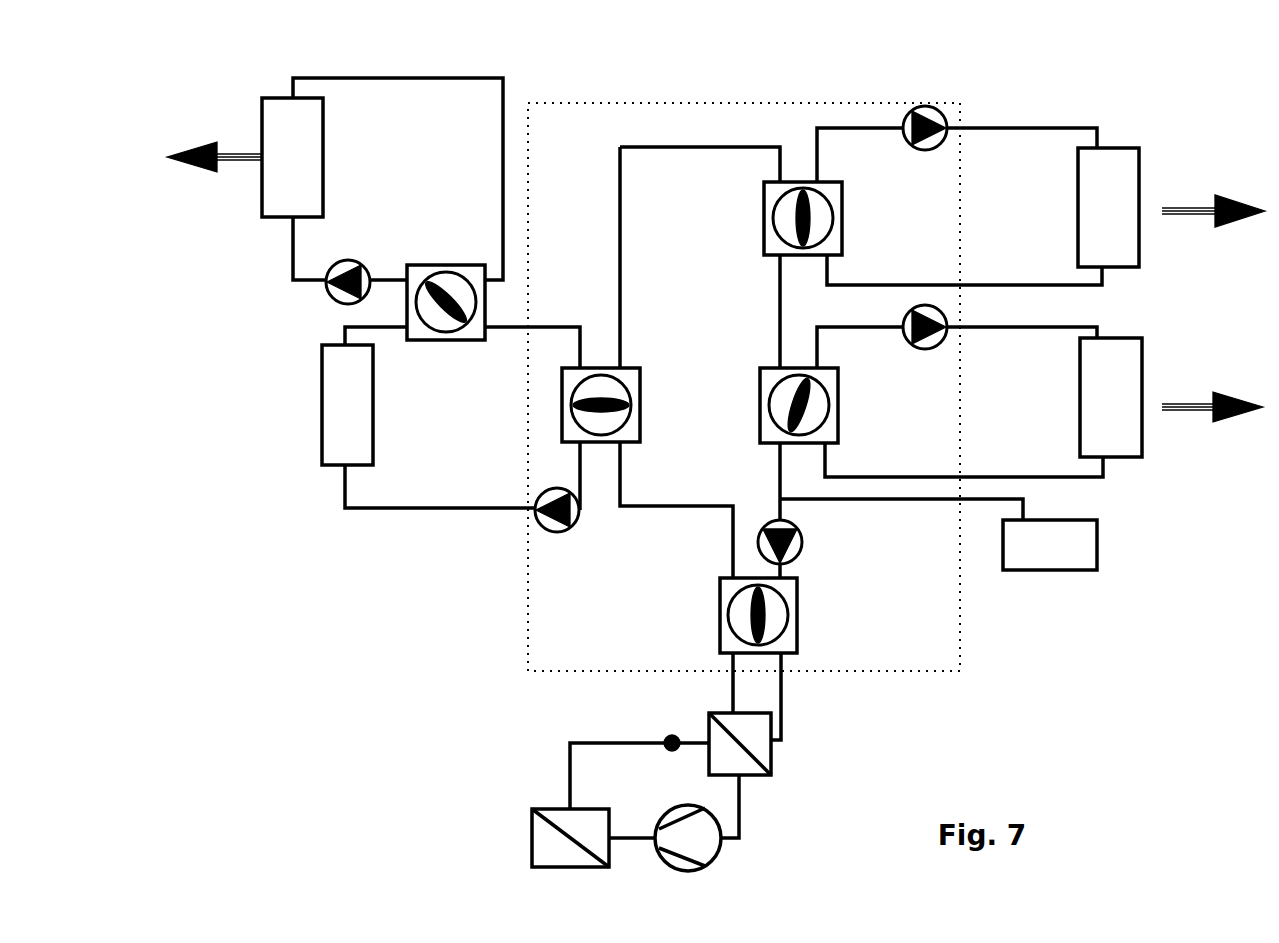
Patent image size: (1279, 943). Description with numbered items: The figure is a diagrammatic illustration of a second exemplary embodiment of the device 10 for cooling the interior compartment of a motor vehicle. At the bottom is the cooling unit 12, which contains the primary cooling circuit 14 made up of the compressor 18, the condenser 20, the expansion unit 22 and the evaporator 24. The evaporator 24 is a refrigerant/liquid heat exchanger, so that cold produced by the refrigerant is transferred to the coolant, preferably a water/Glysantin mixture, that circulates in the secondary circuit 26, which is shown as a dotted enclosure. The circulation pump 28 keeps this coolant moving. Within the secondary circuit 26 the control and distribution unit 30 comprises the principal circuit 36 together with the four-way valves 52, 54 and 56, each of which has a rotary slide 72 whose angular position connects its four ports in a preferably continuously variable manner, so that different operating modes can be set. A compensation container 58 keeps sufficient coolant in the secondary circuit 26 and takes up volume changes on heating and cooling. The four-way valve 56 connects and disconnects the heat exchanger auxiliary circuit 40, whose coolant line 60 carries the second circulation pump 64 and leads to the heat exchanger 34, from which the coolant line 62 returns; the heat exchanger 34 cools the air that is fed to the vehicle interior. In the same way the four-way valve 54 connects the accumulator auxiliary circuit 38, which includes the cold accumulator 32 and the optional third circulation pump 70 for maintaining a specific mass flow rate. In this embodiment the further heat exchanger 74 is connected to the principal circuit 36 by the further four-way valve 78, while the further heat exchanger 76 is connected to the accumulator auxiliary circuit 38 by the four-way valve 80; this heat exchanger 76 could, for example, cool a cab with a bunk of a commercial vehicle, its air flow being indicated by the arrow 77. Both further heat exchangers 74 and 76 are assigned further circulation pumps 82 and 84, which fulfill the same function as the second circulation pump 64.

The device 10 is at (716, 468).
The cooling unit 12 is at (668, 788).
The primary cooling circuit 14 is at (590, 742).
The compressor 18 is at (707, 850).
The condenser 20 is at (550, 847).
The expansion unit 22 is at (670, 733).
The evaporator 24 is at (763, 755).
The secondary circuit 26 is at (787, 88).
The circulation pump 28 is at (795, 553).
The control and distribution unit 30 is at (608, 103).
The cold accumulator 32 is at (335, 418).
The heat exchanger 34 is at (1128, 188).
The principal circuit 36 is at (693, 147).
The accumulator auxiliary circuit 38 is at (417, 510).
The heat exchanger auxiliary circuit 40 is at (980, 127).
The four-way valve 52 is at (722, 608).
The four-way valve 54 is at (641, 407).
The four-way valve 56 is at (763, 217).
The compensation container 58 is at (1042, 553).
The coolant line 60 is at (1055, 127).
The coolant line 62 is at (990, 282).
The second circulation pump 64 is at (925, 107).
The third circulation pump 70 is at (550, 525).
The rotary slide 72 is at (807, 207).
The further heat exchanger 74 is at (1122, 373).
The further heat exchanger 76 is at (308, 162).
The air flow 77 is at (238, 152).
The four-way valve 78 is at (762, 402).
The four-way valve 80 is at (487, 302).
The further circulation pump 82 is at (927, 347).
The further circulation pump 84 is at (345, 262).